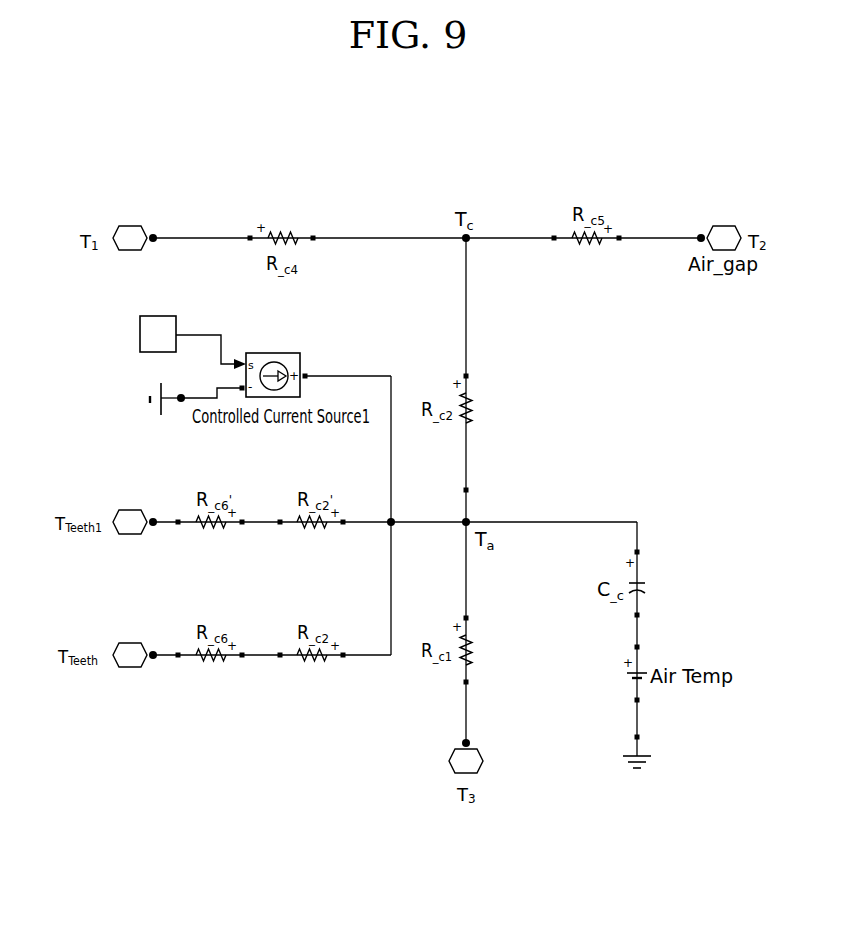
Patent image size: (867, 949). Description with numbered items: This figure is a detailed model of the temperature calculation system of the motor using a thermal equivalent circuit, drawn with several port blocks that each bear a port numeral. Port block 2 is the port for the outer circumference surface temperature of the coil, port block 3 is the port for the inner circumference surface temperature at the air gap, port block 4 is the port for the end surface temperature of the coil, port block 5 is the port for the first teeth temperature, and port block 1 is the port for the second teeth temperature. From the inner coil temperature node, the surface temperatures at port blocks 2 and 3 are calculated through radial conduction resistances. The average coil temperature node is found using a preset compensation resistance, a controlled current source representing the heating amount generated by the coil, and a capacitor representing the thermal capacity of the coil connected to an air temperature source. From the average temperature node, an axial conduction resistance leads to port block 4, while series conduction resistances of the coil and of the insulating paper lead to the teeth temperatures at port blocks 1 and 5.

The T_Teeth port 1 is at (135, 655).
The T1 port 2 is at (135, 238).
The T2 / Air_gap port 3 is at (719, 238).
The T3 port 4 is at (466, 756).
The T_Teeth1 port 5 is at (135, 522).